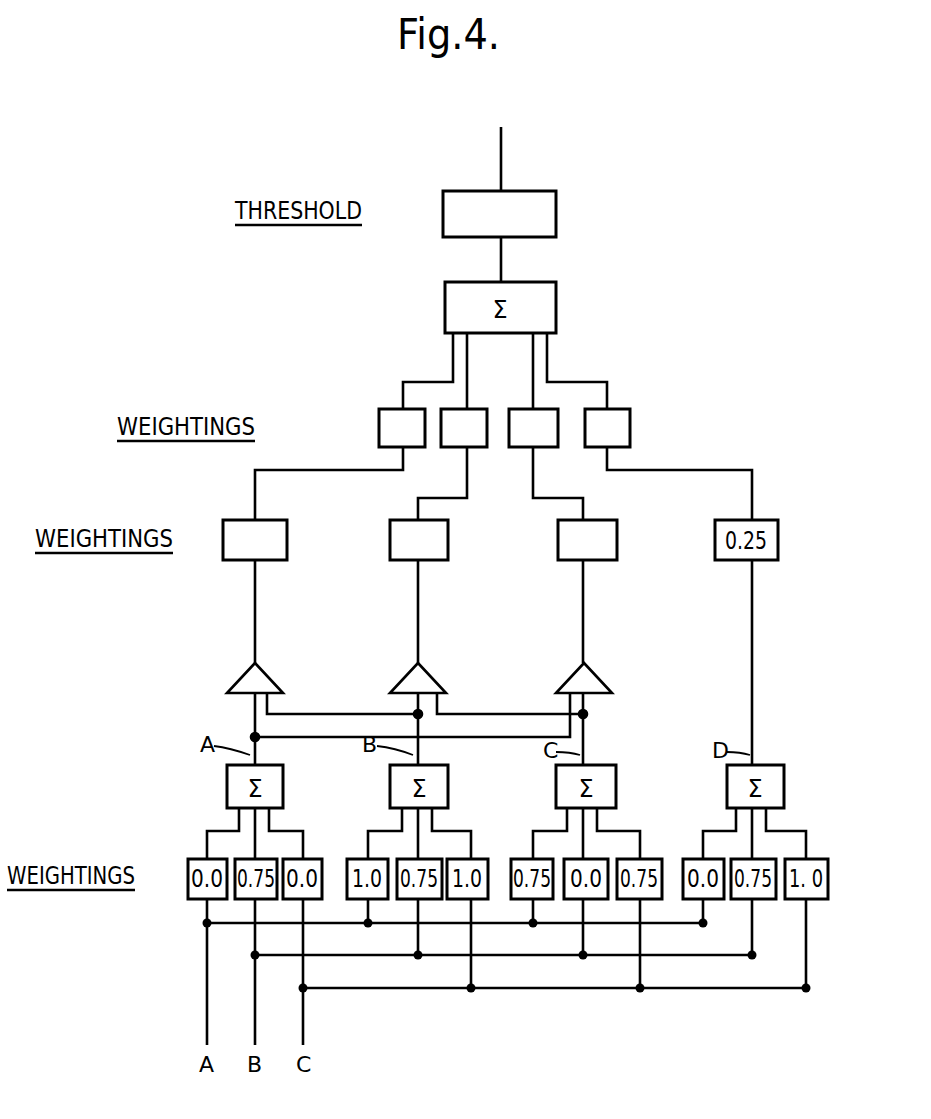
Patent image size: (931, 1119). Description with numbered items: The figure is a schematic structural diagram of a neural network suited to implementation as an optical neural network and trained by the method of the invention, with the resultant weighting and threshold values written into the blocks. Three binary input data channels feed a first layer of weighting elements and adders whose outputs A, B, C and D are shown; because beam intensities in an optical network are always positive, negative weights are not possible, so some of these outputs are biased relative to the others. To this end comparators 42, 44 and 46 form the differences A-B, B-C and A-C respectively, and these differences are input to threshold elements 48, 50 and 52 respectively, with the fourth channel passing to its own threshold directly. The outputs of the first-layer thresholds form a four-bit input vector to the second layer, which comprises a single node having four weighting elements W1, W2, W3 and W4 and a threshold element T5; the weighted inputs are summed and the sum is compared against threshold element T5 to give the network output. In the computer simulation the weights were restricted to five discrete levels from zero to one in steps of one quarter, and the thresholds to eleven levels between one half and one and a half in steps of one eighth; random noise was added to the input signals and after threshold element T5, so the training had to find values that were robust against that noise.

The threshold element T5 is at (548, 222).
The weighting element W1 is at (378, 418).
The weighting element W2 is at (450, 447).
The weighting element W3 is at (538, 447).
The weighting element W4 is at (630, 427).
The comparator 42 is at (266, 684).
The comparator 44 is at (429, 684).
The comparator 46 is at (595, 684).
The threshold element 48 is at (245, 562).
The threshold element 50 is at (410, 562).
The threshold element 52 is at (578, 562).